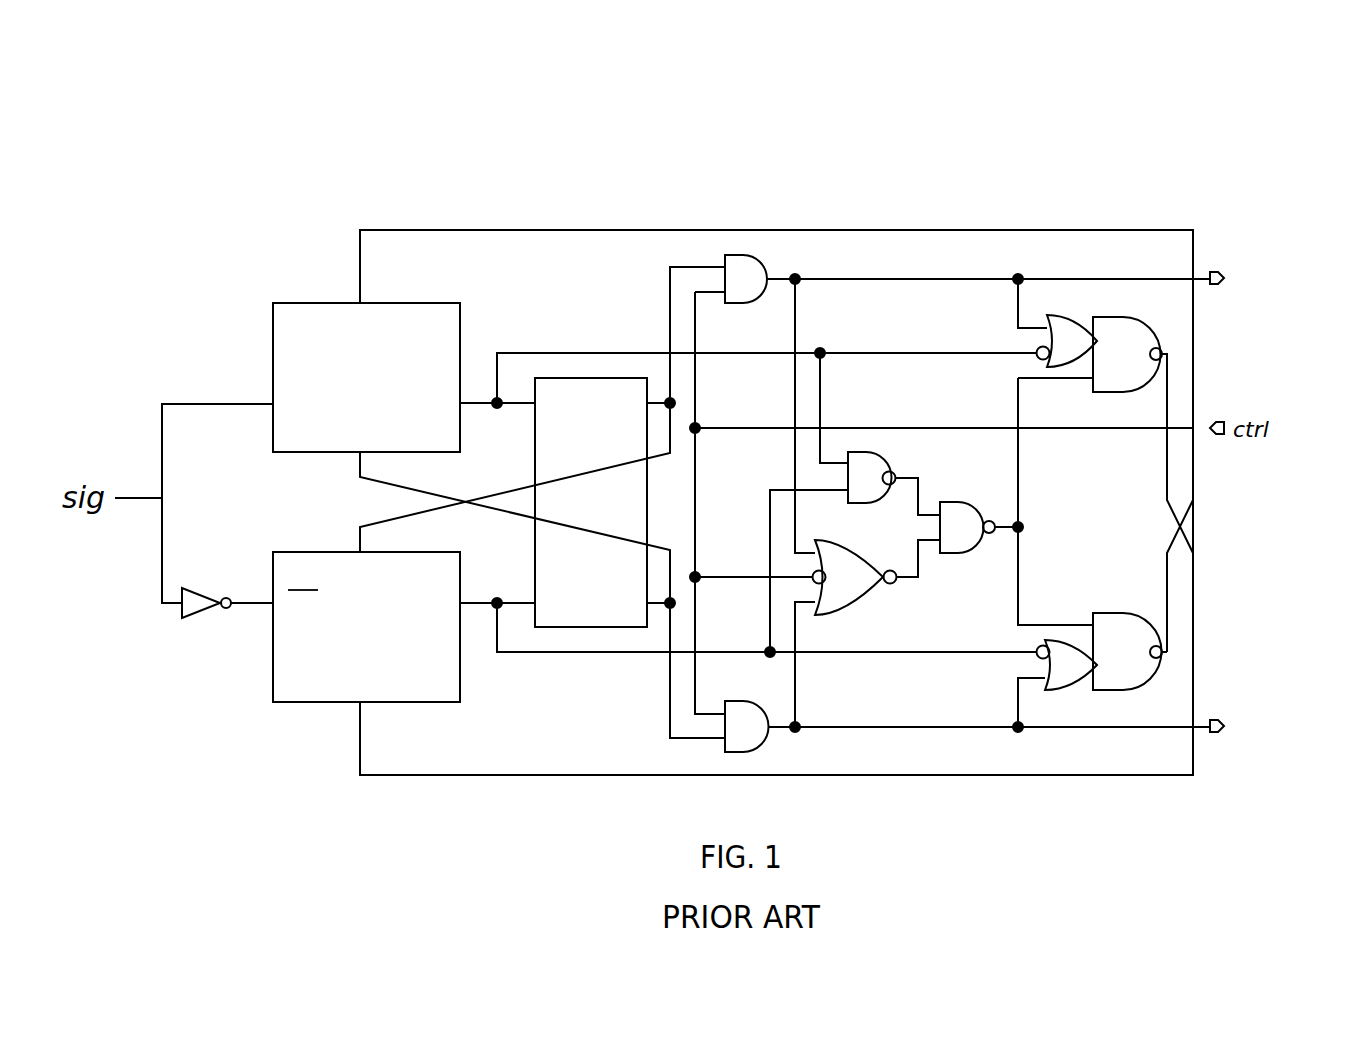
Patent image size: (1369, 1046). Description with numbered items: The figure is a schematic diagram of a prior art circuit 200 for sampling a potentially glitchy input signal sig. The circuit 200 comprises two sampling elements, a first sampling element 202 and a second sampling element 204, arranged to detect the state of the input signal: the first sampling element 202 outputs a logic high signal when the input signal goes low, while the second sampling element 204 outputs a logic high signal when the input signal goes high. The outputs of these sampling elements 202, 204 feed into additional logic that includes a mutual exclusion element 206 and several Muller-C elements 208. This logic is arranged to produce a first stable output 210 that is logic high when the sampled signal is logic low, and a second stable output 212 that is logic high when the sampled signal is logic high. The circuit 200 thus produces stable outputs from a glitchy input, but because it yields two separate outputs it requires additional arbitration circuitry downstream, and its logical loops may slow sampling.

The circuit 200 is at (268, 220).
The first sampling element 202 is at (273, 331).
The second sampling element 204 is at (273, 660).
The mutual exclusion element 206 is at (590, 378).
The Muller-C elements 208 is at (958, 502).
The first stable output 210 is at (1224, 268).
The second stable output 212 is at (1215, 717).